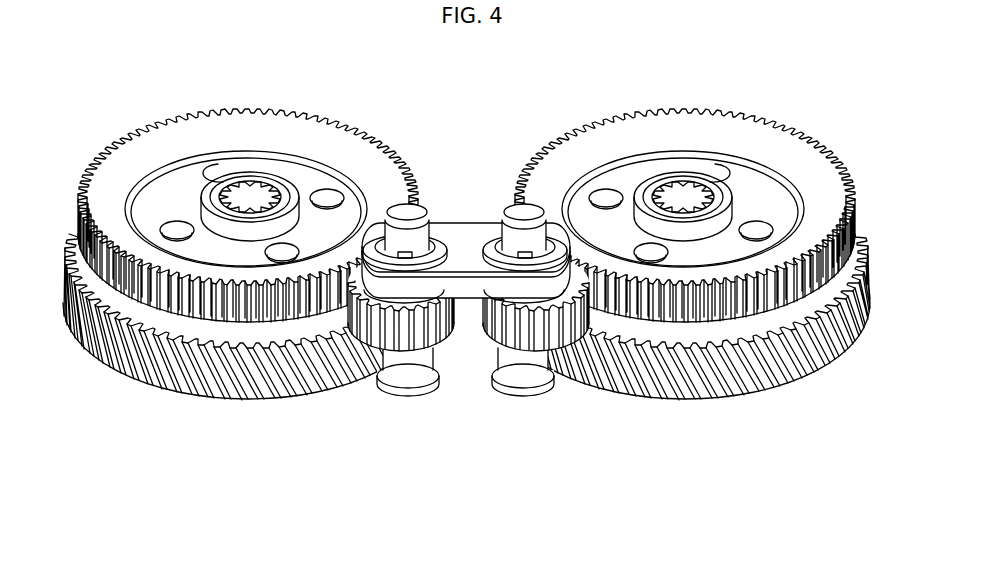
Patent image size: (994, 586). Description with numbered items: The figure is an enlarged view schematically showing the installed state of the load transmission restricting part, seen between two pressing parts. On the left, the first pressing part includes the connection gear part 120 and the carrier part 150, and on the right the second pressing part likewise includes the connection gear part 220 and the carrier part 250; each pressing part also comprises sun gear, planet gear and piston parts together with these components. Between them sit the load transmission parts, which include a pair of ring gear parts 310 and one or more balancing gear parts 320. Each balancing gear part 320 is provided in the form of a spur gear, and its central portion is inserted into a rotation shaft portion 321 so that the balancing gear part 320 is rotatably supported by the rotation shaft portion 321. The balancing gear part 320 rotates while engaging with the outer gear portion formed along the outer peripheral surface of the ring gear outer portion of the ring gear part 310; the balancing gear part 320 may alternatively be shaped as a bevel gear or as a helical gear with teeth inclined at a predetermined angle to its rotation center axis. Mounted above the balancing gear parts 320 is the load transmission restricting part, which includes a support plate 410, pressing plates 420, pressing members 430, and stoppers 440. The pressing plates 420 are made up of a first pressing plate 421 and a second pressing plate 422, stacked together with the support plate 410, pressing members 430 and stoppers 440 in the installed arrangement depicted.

The connection gear part 120 is at (207, 377).
The carrier part 150 is at (178, 187).
The connection gear part 220 is at (765, 377).
The carrier part 250 is at (763, 192).
The ring gear part 310 is at (837, 190).
The balancing gear part 320 is at (383, 322).
The rotation shaft portion 321 is at (410, 370).
The support plate 410 is at (477, 233).
The pressing plate 420 is at (466, 186).
The first pressing plate 421 is at (435, 300).
The second pressing plate 422 is at (468, 290).
The pressing member 430 is at (558, 246).
The stopper 440 is at (370, 248).